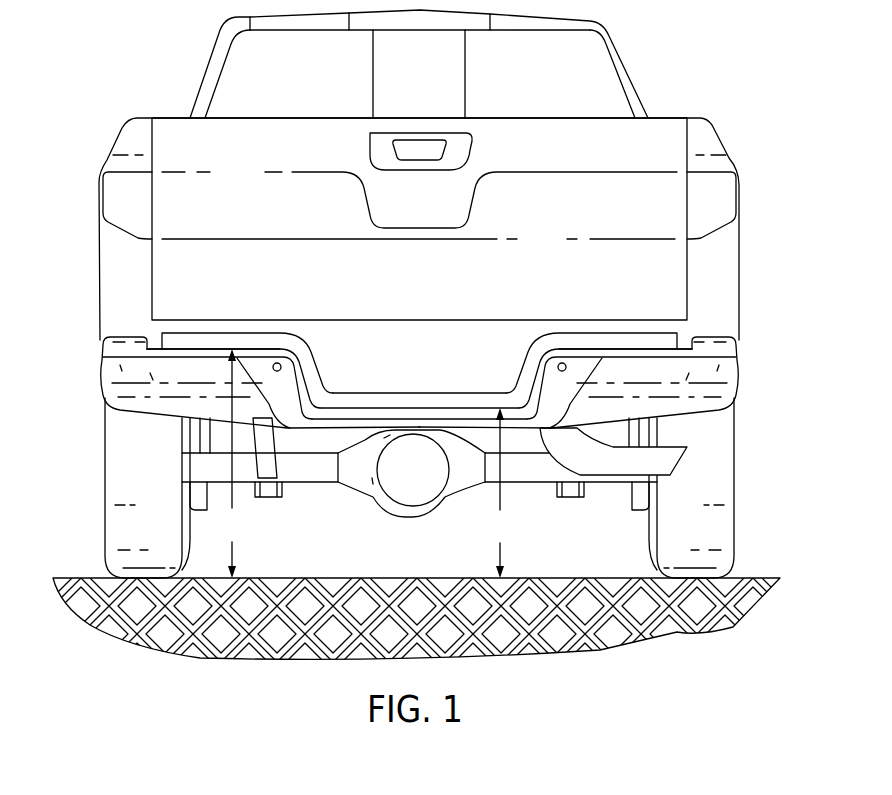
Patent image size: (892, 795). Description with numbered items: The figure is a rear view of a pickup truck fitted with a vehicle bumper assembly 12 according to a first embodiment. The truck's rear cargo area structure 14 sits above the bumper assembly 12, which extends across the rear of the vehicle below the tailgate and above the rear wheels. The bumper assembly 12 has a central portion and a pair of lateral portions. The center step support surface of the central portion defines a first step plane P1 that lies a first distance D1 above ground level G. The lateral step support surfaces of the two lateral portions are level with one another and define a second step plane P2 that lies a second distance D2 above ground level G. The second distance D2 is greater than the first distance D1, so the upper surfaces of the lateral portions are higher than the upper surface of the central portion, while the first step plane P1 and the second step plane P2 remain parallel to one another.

The rear cargo area structure 14 is at (693, 120).
The vehicle bumper assembly 12 is at (451, 357).
The first step plane P1 is at (395, 408).
The second step plane P2 is at (263, 349).
The first distance D1 is at (499, 493).
The second distance D2 is at (232, 463).
The ground level G is at (746, 578).